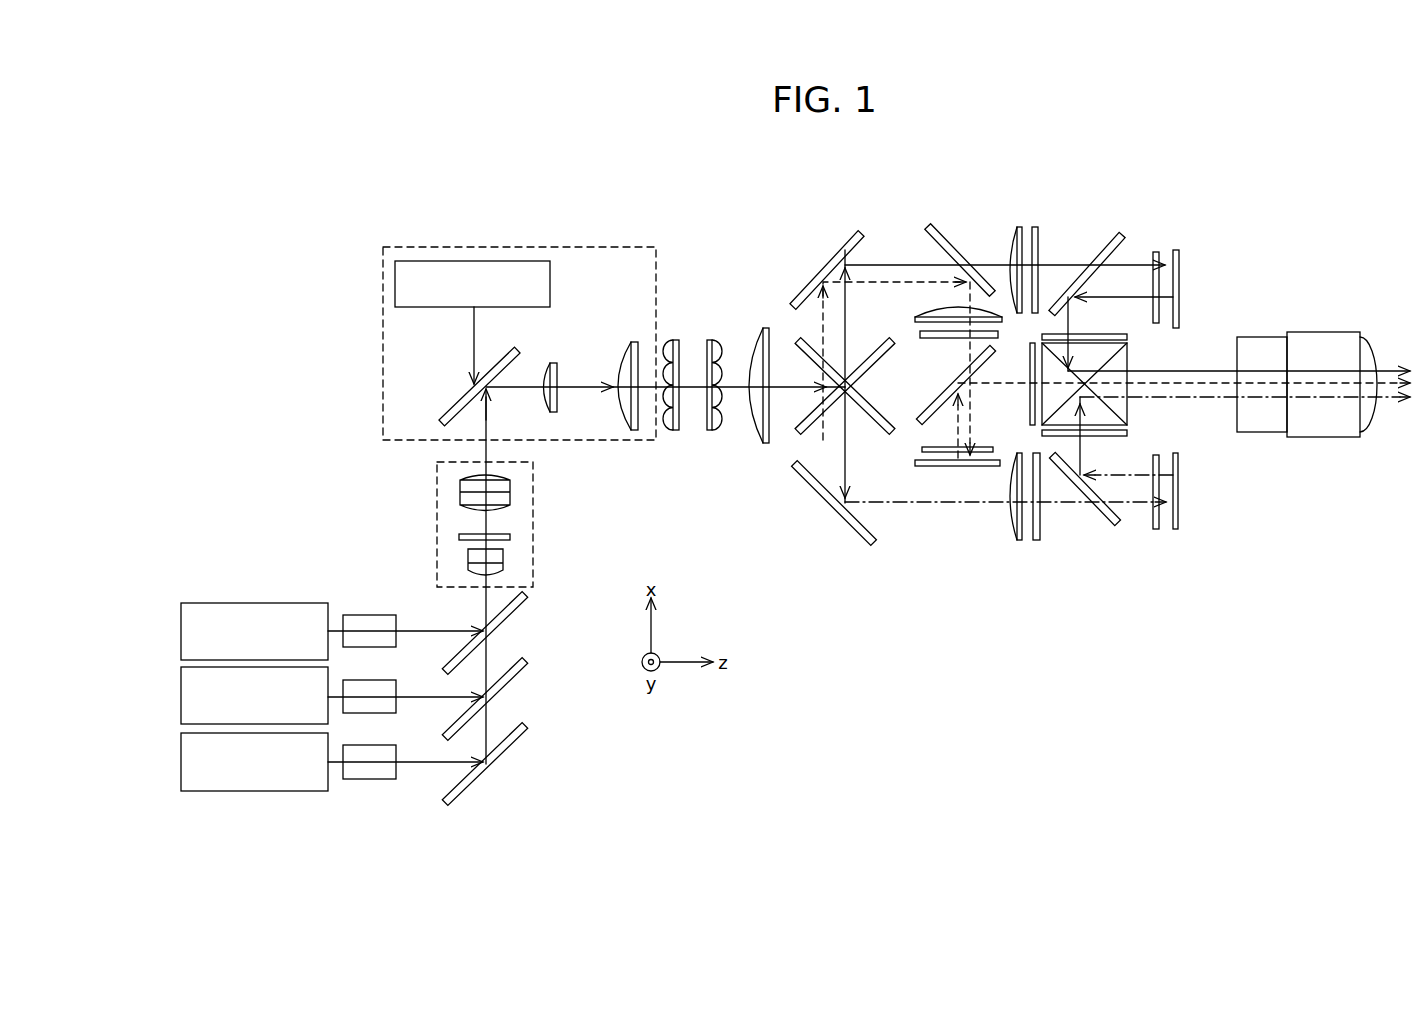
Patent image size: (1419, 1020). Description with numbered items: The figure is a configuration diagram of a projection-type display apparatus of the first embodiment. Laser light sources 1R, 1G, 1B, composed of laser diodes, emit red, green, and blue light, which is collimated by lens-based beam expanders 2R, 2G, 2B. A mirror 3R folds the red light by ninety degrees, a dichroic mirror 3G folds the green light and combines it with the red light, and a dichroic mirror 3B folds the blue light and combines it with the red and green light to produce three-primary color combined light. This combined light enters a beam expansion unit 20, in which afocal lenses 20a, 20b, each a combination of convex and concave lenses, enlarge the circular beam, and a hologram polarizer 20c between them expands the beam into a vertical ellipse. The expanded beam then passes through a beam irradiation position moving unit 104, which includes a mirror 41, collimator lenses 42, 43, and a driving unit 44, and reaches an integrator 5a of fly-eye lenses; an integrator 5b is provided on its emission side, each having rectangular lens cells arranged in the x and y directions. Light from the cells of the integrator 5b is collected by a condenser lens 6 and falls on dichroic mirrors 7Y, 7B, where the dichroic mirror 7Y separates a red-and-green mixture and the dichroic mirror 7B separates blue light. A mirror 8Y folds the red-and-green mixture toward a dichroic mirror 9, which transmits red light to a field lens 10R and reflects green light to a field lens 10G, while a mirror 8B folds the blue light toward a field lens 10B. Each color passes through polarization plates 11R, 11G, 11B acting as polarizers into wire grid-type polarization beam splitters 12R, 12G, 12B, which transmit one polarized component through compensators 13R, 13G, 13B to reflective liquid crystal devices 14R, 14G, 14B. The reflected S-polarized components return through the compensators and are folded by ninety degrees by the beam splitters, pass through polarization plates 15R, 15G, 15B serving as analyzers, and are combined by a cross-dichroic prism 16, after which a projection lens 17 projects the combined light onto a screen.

The laser light source 1B is at (181, 628).
The laser light source 1G is at (181, 694).
The laser light source 1R is at (181, 759).
The beam expander 2B is at (375, 615).
The beam expander 2G is at (375, 681).
The beam expander 2R is at (375, 746).
The dichroic mirror 3B is at (515, 615).
The dichroic mirror 3G is at (515, 681).
The mirror 3R is at (515, 746).
The beam expansion unit 20 is at (437, 514).
The afocal lens 20a is at (503, 565).
The afocal lens 20b is at (510, 492).
The hologram polarizer 20c is at (510, 537).
The beam irradiation position moving unit 104 is at (548, 247).
The mirror 41 is at (455, 405).
The collimator lens 42 is at (550, 363).
The collimator lens 43 is at (632, 342).
The driving unit 44 is at (550, 282).
The integrator 5a is at (676, 340).
The integrator 5b is at (709, 340).
The condenser lens 6 is at (766, 328).
The dichroic mirror 7Y is at (858, 350).
The dichroic mirror 7B is at (852, 420).
The mirror 8Y is at (823, 265).
The mirror 8B is at (828, 519).
The dichroic mirror 9 is at (956, 244).
The field lens 10R is at (1014, 230).
The field lens 10G is at (948, 304).
The field lens 10B is at (1012, 545).
The polarization plate 11R is at (1035, 227).
The polarization plate 11G is at (918, 340).
The polarization plate 11B is at (1038, 540).
The wire grid-type polarization beam splitter 12R is at (1100, 243).
The wire grid-type polarization beam splitter 12G is at (932, 410).
The wire grid-type polarization beam splitter 12B is at (1098, 515).
The compensator 13R is at (1156, 252).
The compensator 13G is at (920, 449).
The compensator 13B is at (1156, 530).
The reflective liquid crystal device 14R is at (1179, 290).
The reflective liquid crystal device 14G is at (952, 468).
The reflective liquid crystal device 14B is at (1180, 498).
The polarization plate 15R is at (1128, 338).
The polarization plate 15G is at (1030, 400).
The polarization plate 15B is at (1128, 432).
The cross-dichroic prism 16 is at (1130, 388).
The projection lens 17 is at (1325, 438).